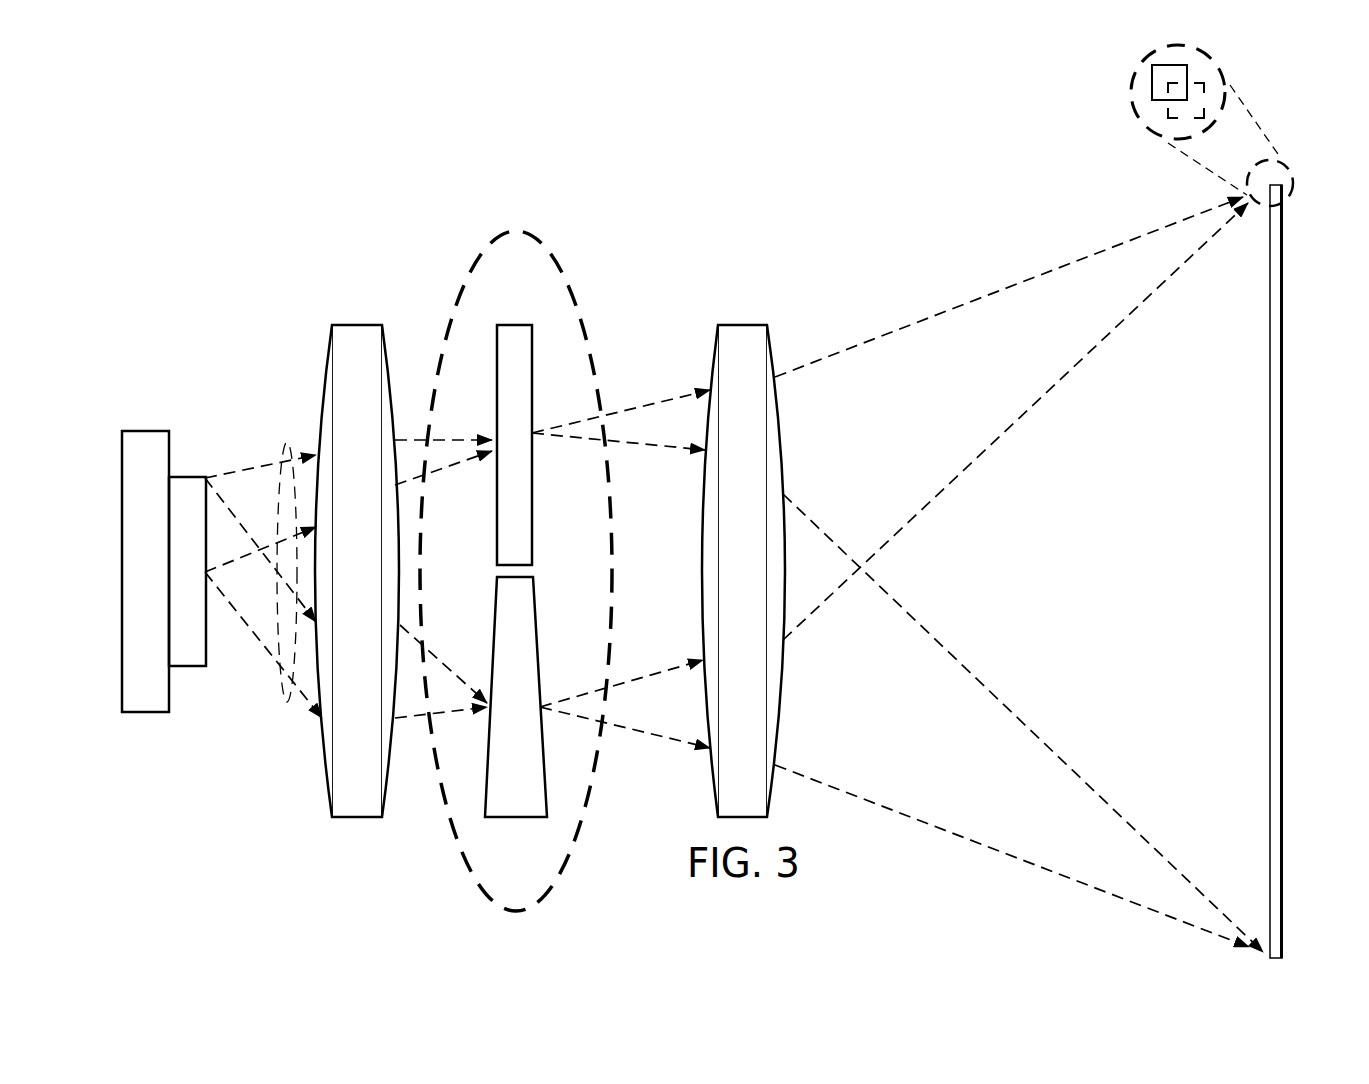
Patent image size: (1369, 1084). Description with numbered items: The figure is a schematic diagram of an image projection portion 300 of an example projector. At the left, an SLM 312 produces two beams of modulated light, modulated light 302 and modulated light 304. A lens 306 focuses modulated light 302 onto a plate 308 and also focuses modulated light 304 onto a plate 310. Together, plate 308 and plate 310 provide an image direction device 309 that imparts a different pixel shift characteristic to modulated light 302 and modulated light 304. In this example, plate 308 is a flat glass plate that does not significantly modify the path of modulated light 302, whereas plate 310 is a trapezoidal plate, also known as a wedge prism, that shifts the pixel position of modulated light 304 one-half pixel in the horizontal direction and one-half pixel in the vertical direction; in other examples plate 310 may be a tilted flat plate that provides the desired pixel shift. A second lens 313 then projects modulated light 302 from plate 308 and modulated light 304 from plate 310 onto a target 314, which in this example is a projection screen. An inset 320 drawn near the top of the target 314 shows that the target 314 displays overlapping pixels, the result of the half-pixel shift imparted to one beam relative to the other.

The image projection portion 300 is at (636, 150).
The modulated light 302 is at (283, 443).
The modulated light 304 is at (285, 703).
The lens 306 is at (352, 325).
The plate 308 is at (512, 325).
The image direction device 309 is at (490, 240).
The plate 310 is at (513, 818).
The SLM 312 is at (138, 431).
The lens 313 is at (742, 325).
The target 314 is at (1283, 570).
The inset 320 is at (1131, 92).